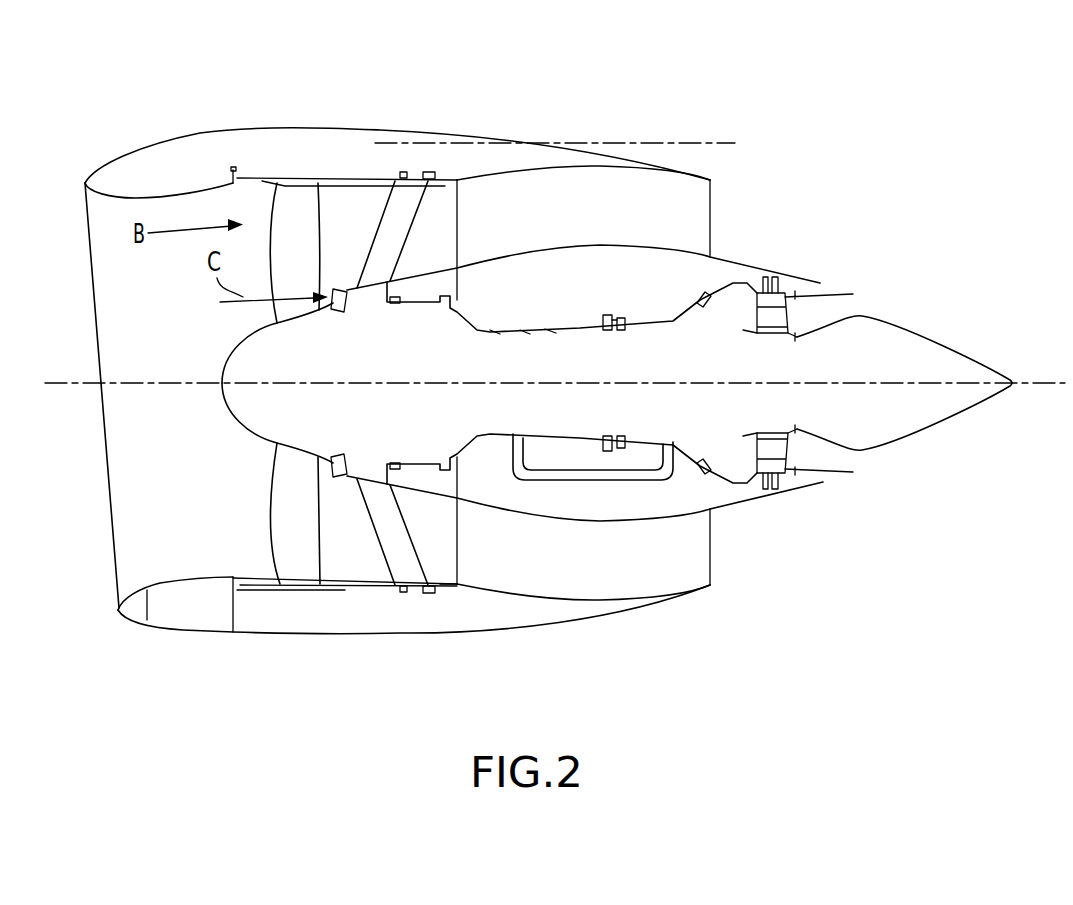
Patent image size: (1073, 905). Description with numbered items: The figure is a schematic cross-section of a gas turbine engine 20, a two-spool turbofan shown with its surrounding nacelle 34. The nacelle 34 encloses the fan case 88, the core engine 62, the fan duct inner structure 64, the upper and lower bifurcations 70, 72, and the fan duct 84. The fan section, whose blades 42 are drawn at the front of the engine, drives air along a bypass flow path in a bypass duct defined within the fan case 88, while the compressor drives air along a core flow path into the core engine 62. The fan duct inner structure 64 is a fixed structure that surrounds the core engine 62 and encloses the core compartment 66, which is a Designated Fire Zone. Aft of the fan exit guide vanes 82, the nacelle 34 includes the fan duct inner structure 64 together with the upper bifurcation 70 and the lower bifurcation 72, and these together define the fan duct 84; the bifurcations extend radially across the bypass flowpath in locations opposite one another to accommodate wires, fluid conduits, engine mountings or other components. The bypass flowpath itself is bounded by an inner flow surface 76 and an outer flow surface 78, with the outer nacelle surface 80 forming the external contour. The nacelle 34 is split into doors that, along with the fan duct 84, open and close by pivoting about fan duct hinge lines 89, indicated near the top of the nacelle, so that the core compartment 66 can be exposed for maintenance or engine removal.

The gas turbine engine 20 is at (648, 79).
The nacelle 34 is at (201, 118).
The fan blade 42 is at (275, 495).
The core engine 62 is at (598, 315).
The fan duct inner structure 64 is at (543, 253).
The core compartment 66 is at (640, 505).
The upper bifurcation 70 is at (607, 214).
The lower bifurcation 72 is at (637, 575).
The inner flow surface 76 is at (515, 515).
The outer flow surface 78 is at (530, 597).
The nacelle outer surface 80 is at (522, 628).
The fan exit guide vanes 82 is at (385, 527).
The fan duct 84 is at (580, 517).
The fan case 88 is at (345, 585).
The fan duct hinge lines 89 is at (683, 142).